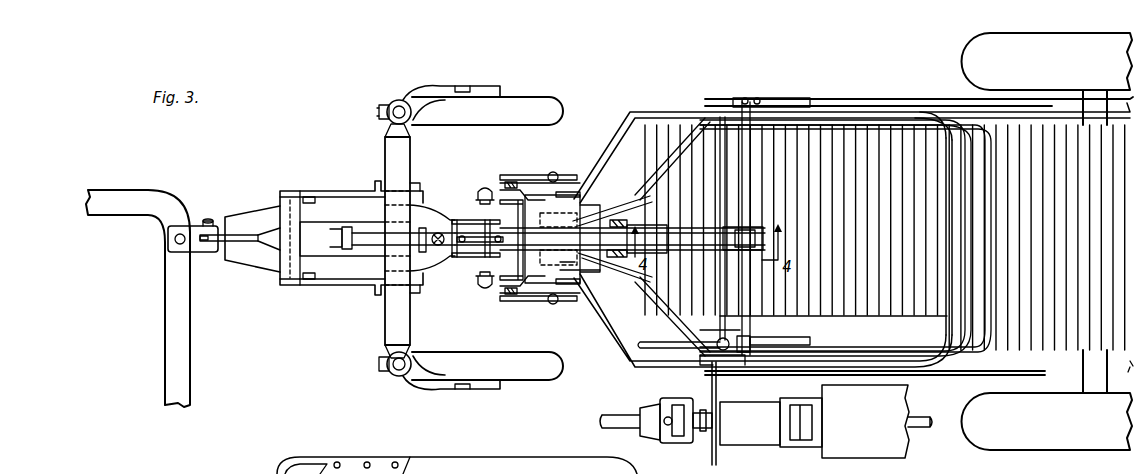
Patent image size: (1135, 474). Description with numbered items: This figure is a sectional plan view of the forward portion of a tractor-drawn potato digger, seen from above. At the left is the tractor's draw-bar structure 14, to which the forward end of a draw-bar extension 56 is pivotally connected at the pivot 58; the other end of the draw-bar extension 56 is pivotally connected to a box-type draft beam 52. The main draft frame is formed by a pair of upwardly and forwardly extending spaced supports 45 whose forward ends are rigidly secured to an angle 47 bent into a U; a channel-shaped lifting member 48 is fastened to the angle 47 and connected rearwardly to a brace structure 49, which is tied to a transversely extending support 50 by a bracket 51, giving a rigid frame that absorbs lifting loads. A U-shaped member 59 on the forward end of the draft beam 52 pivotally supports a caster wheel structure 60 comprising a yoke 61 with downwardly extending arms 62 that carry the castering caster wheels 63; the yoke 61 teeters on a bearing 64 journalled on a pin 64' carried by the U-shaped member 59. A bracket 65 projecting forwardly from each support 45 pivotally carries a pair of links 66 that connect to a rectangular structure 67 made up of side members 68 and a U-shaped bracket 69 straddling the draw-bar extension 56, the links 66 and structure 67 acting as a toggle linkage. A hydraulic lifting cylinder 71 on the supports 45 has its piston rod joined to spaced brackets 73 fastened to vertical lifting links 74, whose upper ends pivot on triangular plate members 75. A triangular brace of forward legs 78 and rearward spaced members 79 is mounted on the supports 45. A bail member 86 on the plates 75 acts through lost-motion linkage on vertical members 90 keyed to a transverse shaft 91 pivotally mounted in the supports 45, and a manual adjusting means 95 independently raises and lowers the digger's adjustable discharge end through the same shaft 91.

The draw-bar structure 14 is at (165, 349).
The supports 45 is at (607, 173).
The angle 47 is at (570, 278).
The lifting member 48 is at (537, 196).
The brace structure 49 is at (637, 204).
The transversely extending support 50 is at (713, 113).
The bracket 51 is at (687, 234).
The box-type draft beam 52 is at (437, 232).
The draw-bar extension 56 is at (317, 213).
The pivotal connection 58 is at (209, 220).
The U-shaped member 59 is at (338, 223).
The caster wheel structure 60 is at (412, 168).
The yoke 61 is at (407, 142).
The arms 62 is at (416, 101).
The caster wheels 63 is at (522, 103).
The bearing 64 is at (396, 285).
The pin 64' is at (315, 277).
The bracket 65 is at (510, 183).
The links 66 is at (483, 188).
The rectangular structure 67 is at (302, 192).
The side members 68 is at (308, 192).
The U-shaped bracket 69 is at (290, 258).
The hydraulic lifting cylinder 71 is at (437, 244).
The brackets 73 is at (477, 218).
The lifting links 74 is at (501, 227).
The triangular plate members 75 is at (553, 200).
The forward legs 78 is at (517, 178).
The rearward spaced members 79 is at (616, 201).
The bail member 86 is at (592, 252).
The vertical members 90 is at (758, 232).
The transverse shaft 91 is at (750, 123).
The manual adjusting means 95 is at (643, 350).